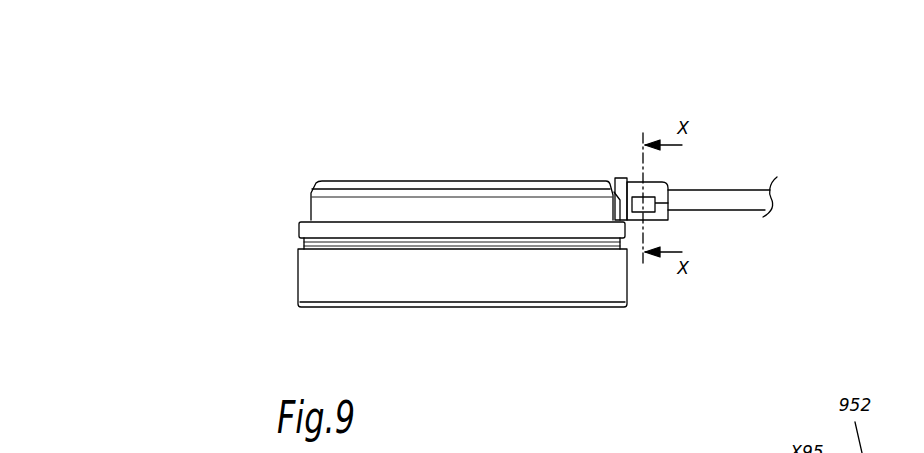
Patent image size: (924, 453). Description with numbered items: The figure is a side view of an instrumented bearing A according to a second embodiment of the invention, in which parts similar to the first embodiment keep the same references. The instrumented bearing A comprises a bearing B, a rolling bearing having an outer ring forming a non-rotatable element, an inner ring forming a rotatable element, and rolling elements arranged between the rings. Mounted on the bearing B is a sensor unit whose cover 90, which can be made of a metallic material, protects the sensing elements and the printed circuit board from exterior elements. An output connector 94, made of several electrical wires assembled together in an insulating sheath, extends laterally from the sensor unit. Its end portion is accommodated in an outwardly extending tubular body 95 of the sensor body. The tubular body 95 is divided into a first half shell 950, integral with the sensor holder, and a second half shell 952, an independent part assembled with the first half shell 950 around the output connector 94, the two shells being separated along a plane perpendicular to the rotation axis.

The cover 90 is at (365, 180).
The instrumented bearing A is at (443, 167).
The bearing B is at (445, 282).
The output connector 94 is at (745, 198).
The tubular body 95 is at (845, 91).
The first half shell 950 is at (665, 206).
The second half shell 952 is at (655, 190).